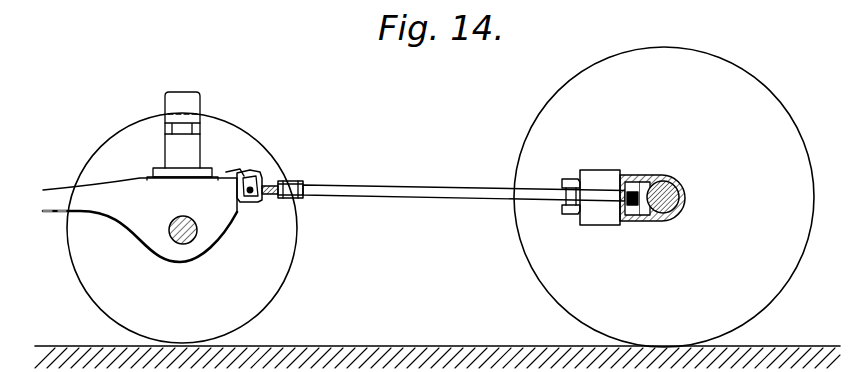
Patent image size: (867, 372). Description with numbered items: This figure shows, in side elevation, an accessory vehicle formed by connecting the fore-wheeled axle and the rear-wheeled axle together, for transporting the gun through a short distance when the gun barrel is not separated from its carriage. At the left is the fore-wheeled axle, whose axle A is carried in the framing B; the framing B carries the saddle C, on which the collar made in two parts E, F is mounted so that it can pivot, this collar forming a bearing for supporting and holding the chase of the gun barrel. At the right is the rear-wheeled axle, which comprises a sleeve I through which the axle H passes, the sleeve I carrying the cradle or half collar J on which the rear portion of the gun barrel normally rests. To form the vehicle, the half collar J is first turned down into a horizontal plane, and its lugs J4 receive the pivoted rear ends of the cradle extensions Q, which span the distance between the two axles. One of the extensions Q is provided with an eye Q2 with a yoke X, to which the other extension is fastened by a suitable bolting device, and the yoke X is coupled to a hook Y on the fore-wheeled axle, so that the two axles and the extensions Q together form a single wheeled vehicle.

The axle A is at (177, 245).
The framing B is at (207, 237).
The saddle C is at (147, 176).
The collar part E is at (187, 149).
The collar part F is at (185, 97).
The yoke X is at (270, 186).
The hook Y is at (251, 201).
The cradle extension Q is at (423, 196).
The eye Q2 is at (293, 181).
The cradle or half collar J is at (653, 182).
The lugs J4 is at (553, 228).
The axle H is at (683, 190).
The sleeve I is at (680, 213).